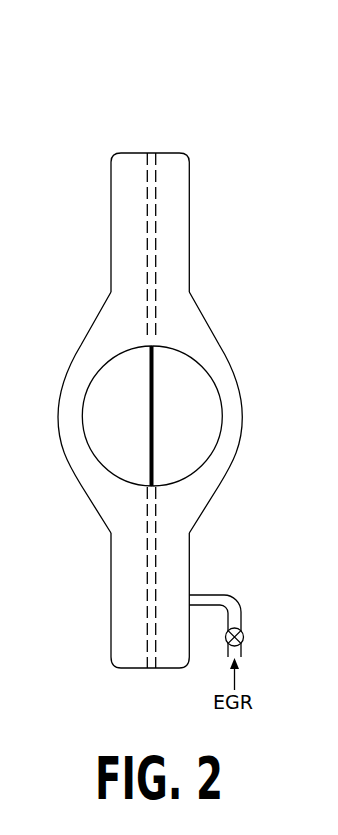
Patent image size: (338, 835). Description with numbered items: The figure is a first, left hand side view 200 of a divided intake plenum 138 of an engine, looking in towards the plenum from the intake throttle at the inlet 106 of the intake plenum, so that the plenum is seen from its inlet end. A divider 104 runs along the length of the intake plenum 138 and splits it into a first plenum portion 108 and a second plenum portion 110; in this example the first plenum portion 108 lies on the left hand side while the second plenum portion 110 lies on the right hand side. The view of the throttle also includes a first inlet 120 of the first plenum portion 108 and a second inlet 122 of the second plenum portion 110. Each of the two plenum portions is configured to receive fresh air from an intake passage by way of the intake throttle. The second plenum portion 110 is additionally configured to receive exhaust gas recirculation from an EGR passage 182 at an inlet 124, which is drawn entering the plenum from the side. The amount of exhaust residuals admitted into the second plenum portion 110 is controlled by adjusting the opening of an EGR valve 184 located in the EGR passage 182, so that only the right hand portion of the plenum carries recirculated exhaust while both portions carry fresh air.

The first view 200 is at (161, 47).
The intake plenum 138 is at (174, 151).
The divider 104 is at (157, 273).
The inlet 106 is at (187, 347).
The first plenum portion 108 is at (108, 398).
The second plenum portion 110 is at (207, 395).
The first inlet 120 is at (110, 477).
The second inlet 122 is at (205, 465).
The inlet 124 is at (190, 590).
The EGR passage 182 is at (207, 598).
The EGR valve 184 is at (243, 630).